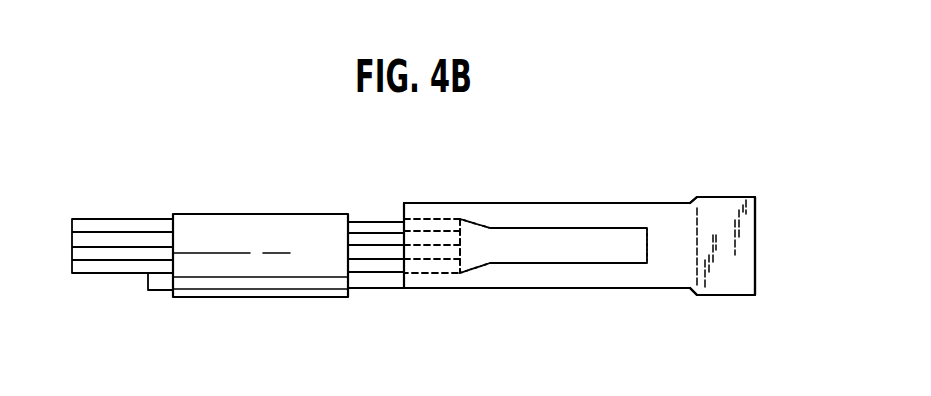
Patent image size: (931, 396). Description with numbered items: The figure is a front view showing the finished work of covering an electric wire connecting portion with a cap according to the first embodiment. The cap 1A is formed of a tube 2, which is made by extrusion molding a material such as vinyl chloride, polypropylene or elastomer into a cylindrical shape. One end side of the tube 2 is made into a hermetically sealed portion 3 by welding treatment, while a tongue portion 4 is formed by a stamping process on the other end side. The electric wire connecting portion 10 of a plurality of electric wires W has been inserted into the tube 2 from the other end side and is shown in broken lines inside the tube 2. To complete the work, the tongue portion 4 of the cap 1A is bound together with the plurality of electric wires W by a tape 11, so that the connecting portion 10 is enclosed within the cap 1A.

The cap 1A is at (600, 194).
The electric wires W is at (122, 238).
The tape 11 is at (255, 278).
The tongue portion 4 is at (372, 280).
The tube 2 is at (531, 278).
The electric wire connecting portion 10 is at (548, 240).
The hermetically sealed portion 3 is at (718, 281).